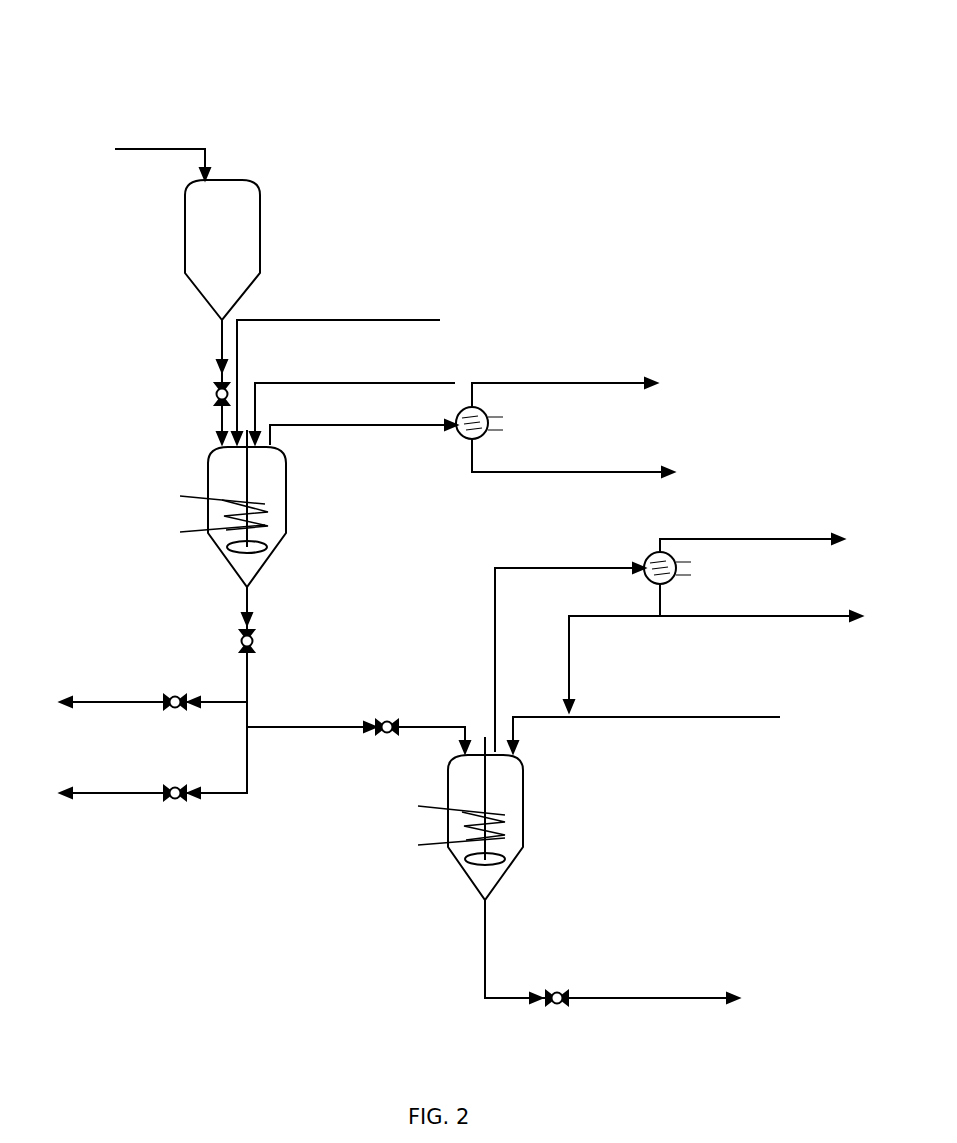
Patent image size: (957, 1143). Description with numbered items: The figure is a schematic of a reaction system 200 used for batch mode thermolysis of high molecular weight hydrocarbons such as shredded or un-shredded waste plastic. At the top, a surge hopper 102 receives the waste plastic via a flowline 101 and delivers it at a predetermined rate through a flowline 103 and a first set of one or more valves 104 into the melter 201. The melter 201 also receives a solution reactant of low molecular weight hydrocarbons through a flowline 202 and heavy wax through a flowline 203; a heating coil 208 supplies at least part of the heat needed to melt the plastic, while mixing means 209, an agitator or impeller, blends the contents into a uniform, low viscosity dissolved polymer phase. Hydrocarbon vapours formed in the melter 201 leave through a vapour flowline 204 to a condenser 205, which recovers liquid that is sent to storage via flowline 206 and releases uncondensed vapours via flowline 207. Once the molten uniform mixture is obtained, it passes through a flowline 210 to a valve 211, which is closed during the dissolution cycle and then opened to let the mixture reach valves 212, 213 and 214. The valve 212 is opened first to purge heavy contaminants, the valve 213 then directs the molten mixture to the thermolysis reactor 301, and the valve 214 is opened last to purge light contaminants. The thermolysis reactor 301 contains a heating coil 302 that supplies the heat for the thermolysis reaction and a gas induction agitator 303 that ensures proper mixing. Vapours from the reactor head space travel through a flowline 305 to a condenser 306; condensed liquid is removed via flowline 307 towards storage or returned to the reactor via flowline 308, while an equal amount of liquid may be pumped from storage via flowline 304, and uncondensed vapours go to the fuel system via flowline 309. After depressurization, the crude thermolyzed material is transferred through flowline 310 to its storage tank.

The reaction system 200 is at (458, 88).
The flowline 101 is at (198, 150).
The surge hopper 102 is at (233, 236).
The flowline 103 is at (215, 350).
The first set of one or more valves 104 is at (210, 396).
The melter 201 is at (207, 464).
The flowline 202 is at (260, 320).
The flowline 203 is at (283, 382).
The vapour flowline 204 is at (358, 430).
The condenser 205 is at (456, 434).
The flowline 206 is at (574, 476).
The flowline 207 is at (576, 382).
The heating coil 208 is at (276, 506).
The mixing means 209 is at (220, 554).
The flowline 210 is at (252, 605).
The valve 211 is at (258, 644).
The valve 212 is at (176, 696).
The valve 213 is at (386, 734).
The valve 214 is at (178, 802).
The thermolysis reactor 301 is at (462, 868).
The heating coil 302 is at (508, 820).
The gas induction agitator 303 is at (505, 861).
The flowline 304 is at (608, 720).
The flowline 305 is at (562, 572).
The condenser 306 is at (652, 556).
The flowline 307 is at (765, 622).
The flowline 308 is at (573, 684).
The flowline 309 is at (766, 538).
The flowline 310 is at (490, 948).